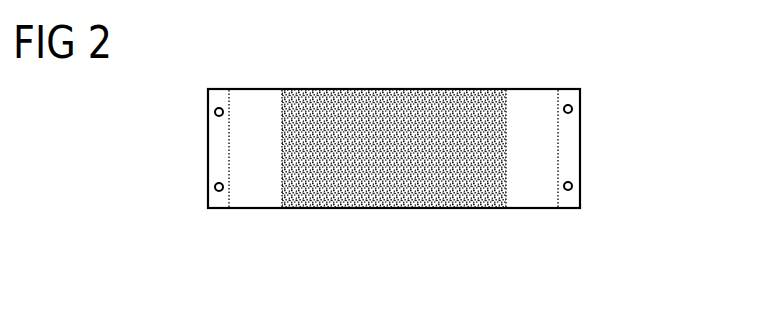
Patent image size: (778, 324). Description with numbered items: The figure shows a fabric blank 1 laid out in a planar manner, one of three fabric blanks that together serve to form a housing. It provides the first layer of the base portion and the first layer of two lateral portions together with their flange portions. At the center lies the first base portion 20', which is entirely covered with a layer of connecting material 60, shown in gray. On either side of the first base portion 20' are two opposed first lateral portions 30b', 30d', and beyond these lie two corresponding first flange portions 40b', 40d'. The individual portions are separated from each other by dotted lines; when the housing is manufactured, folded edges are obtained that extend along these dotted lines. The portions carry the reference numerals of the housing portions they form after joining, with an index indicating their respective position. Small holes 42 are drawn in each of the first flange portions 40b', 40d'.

The filter element / layered assembly 1 is at (545, 63).
The first base portion 20' is at (394, 176).
The connecting material 60 is at (456, 108).
The first flange portion 40d' is at (179, 148).
The first flange portion 40b' is at (611, 148).
The fastening holes / eyelets 42 is at (216, 107).
The first lateral portion 30d' is at (256, 182).
The first lateral portion 30b' is at (531, 182).